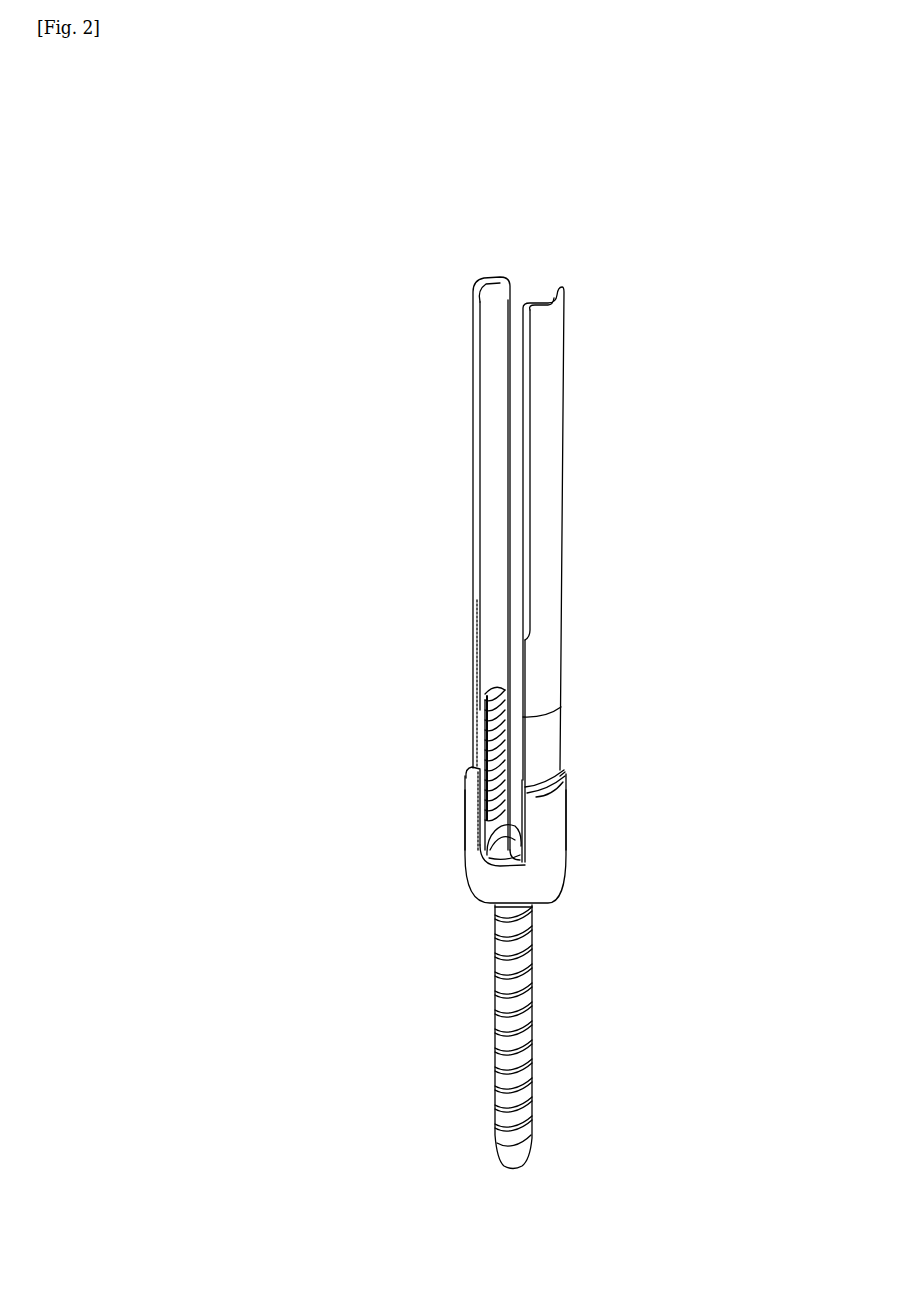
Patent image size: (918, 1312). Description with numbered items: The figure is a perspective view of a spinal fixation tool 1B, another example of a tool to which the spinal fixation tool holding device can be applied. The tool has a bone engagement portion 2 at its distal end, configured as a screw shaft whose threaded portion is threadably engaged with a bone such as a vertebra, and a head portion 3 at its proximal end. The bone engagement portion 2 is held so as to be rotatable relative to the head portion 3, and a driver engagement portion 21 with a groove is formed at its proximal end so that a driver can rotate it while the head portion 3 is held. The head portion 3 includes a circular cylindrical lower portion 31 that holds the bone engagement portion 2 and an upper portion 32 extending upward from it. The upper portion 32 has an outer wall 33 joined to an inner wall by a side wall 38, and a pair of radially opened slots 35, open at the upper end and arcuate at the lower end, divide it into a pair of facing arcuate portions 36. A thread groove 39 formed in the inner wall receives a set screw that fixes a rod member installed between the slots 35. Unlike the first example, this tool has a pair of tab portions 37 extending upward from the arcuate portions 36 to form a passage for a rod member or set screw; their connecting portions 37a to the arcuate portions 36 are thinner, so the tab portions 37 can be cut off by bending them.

The spinal fixation tool 1B is at (534, 229).
The bone engagement portion 2 is at (532, 1000).
The head portion 3 is at (372, 686).
The driver engagement portion 21 is at (483, 860).
The lower portion 31 is at (573, 880).
The upper portion 32 is at (581, 768).
The outer wall 33 is at (463, 798).
The slots 35 is at (480, 858).
The arcuate portions 36 is at (461, 792).
The tab portions 37 is at (473, 513).
The connecting portions 37a is at (471, 769).
The side wall 38 is at (475, 815).
The thread groove 39 is at (468, 768).